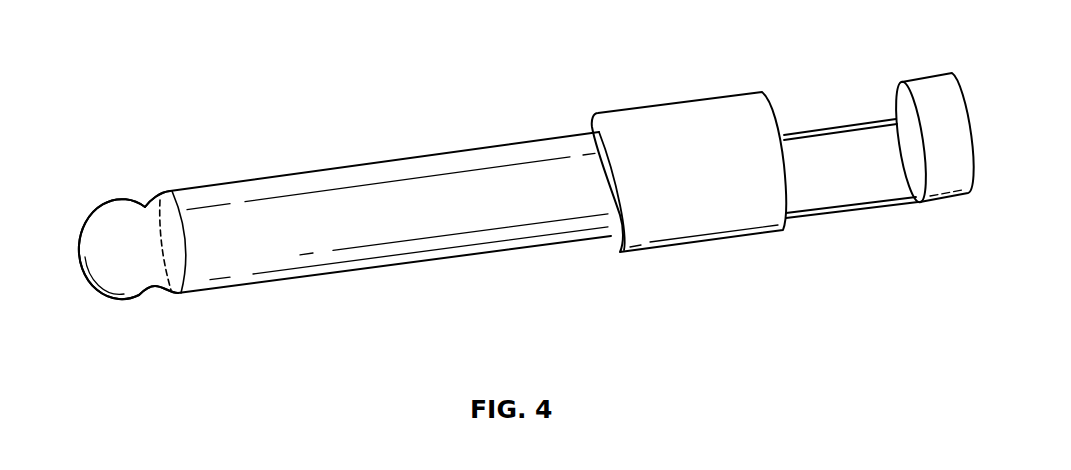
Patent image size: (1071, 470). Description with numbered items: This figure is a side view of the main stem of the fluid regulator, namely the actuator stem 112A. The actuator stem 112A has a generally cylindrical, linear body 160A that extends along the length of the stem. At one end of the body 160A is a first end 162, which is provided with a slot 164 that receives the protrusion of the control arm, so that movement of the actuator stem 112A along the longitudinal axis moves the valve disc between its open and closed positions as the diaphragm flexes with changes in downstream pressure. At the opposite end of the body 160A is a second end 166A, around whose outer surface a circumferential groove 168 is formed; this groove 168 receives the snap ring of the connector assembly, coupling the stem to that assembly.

The actuator stem 112A is at (260, 82).
The body 160A is at (482, 215).
The first end 162 is at (927, 78).
The slot 164 is at (867, 106).
The second end 166A is at (87, 217).
The circumferential groove 168 is at (147, 205).